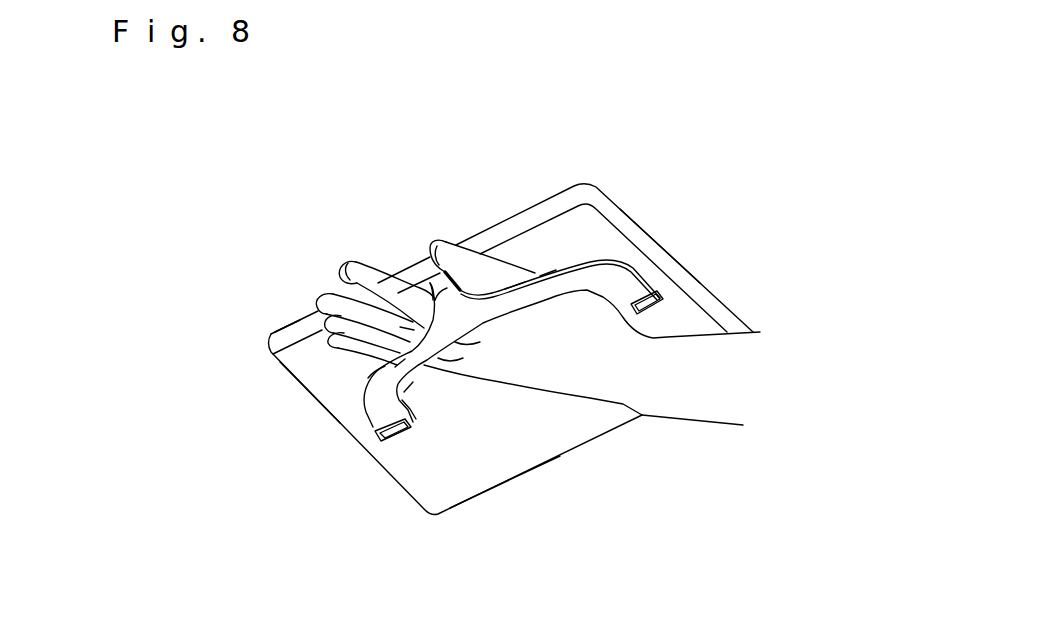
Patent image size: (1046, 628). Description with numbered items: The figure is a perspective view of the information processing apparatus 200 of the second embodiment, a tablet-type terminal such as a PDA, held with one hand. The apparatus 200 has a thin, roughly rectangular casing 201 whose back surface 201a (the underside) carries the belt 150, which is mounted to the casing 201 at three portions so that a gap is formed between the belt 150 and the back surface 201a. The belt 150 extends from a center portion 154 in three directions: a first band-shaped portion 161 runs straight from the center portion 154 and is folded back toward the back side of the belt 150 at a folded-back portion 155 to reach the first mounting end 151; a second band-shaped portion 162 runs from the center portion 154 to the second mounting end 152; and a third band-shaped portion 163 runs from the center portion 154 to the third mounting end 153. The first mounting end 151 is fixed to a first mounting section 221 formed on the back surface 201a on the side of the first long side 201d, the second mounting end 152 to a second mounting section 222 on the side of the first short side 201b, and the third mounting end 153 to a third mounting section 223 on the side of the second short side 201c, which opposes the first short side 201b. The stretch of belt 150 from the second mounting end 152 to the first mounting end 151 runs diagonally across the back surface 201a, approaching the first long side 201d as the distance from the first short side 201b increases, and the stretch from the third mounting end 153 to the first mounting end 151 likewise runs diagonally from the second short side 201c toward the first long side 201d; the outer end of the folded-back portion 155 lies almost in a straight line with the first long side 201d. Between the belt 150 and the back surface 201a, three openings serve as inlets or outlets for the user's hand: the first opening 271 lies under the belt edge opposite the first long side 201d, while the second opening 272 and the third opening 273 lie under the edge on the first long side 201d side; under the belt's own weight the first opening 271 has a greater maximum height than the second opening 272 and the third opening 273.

The information processing apparatus 200 is at (406, 126).
The casing 201 is at (613, 198).
The back surface 201a is at (423, 477).
The first short side 201b is at (650, 232).
The second short side 201c is at (311, 399).
The first long side 201d is at (322, 316).
The belt 150 is at (370, 389).
The first mounting end 151 is at (441, 240).
The second mounting end 152 is at (642, 302).
The third mounting end 153 is at (375, 430).
The center portion 154 is at (466, 322).
The folded-back portion 155 is at (430, 268).
The first band-shaped portion 161 is at (433, 287).
The second band-shaped portion 162 is at (516, 288).
The third band-shaped portion 163 is at (395, 367).
The first mounting section 221 is at (459, 273).
The second mounting section 222 is at (662, 297).
The third mounting section 223 is at (379, 437).
The first opening 271 is at (413, 382).
The second opening 272 is at (545, 268).
The third opening 273 is at (368, 374).